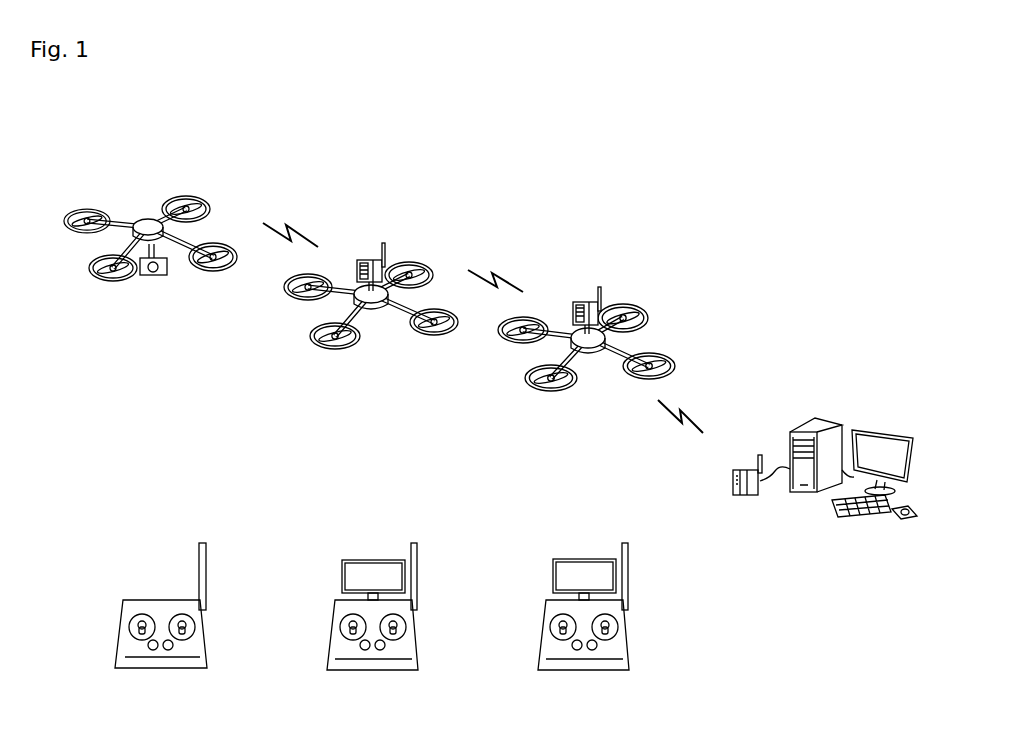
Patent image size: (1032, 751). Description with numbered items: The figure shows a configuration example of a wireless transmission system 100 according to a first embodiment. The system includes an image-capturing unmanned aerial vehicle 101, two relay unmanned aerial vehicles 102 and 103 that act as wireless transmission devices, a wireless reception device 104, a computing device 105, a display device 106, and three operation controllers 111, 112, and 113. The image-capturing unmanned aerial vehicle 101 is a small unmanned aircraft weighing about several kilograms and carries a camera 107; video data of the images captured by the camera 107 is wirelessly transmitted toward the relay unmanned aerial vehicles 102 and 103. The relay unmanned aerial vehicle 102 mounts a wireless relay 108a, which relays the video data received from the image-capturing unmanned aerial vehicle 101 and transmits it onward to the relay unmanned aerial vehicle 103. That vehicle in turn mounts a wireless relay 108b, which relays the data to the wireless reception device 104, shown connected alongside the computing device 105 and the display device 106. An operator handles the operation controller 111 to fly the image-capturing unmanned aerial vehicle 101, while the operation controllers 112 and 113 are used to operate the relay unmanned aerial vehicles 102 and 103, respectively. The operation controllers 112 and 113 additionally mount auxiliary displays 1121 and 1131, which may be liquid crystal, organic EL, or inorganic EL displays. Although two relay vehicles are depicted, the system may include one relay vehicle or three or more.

The wireless transmission system 100 is at (691, 166).
The image-capturing unmanned aerial vehicle 101 is at (222, 197).
The relay unmanned aerial vehicle 102 is at (417, 248).
The relay unmanned aerial vehicle 103 is at (660, 310).
The wireless reception device 104 is at (733, 483).
The computing device 105 is at (803, 430).
The display device 106 is at (888, 432).
The camera 107 is at (152, 276).
The wireless relay 108a is at (364, 260).
The wireless relay 108b is at (580, 302).
The operation controller 111 is at (207, 558).
The operation controller 112 is at (418, 560).
The operation controller 113 is at (630, 562).
The auxiliary display 1121 is at (373, 567).
The auxiliary display 1131 is at (580, 567).